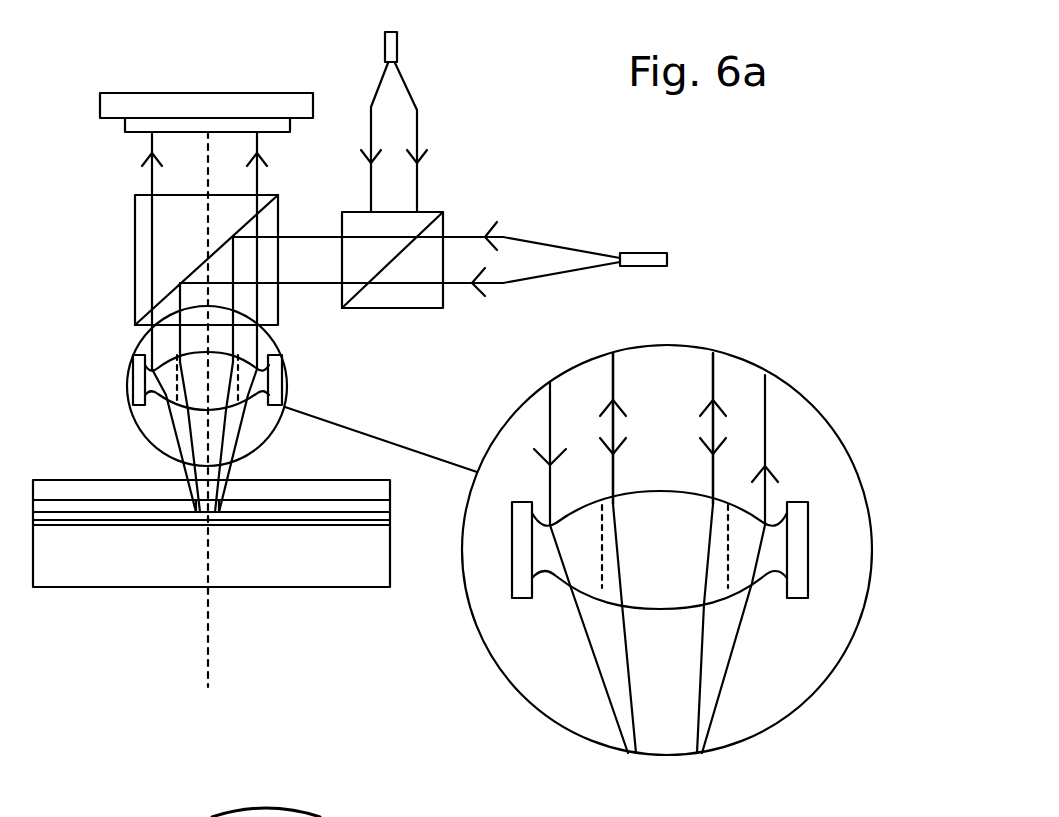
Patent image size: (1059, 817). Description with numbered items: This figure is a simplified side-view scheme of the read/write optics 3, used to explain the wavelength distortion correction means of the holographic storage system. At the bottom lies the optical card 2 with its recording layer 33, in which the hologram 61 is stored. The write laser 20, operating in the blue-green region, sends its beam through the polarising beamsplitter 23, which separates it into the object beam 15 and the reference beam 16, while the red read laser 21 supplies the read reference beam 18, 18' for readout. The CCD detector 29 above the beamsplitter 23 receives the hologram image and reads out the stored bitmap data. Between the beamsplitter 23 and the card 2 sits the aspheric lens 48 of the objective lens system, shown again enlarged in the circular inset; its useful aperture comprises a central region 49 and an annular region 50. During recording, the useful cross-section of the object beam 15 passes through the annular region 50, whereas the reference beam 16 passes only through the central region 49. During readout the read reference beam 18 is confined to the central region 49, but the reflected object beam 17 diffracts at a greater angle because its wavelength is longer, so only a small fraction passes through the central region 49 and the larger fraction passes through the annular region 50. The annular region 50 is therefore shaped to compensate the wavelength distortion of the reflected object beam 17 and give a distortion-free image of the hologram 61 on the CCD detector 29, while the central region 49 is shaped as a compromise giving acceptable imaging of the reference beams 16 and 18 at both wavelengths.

The optical card 2 is at (211, 533).
The read/write optics 3 is at (488, 170).
The object beam 15 is at (550, 410).
The reference beam 16 is at (717, 383).
The reflected object beam 17 is at (770, 430).
The read reference beam 18 is at (685, 385).
The reflected beam 18' is at (696, 385).
The write laser 20 is at (660, 248).
The read laser 21 is at (392, 42).
The polarising beamsplitter 23 is at (182, 223).
The CCD detector 29 is at (194, 103).
The recording layer 33 is at (98, 503).
The aspheric lens 48 is at (272, 382).
The central region 49 is at (651, 575).
The annular region 50 is at (548, 567).
The hologram 61 is at (197, 512).